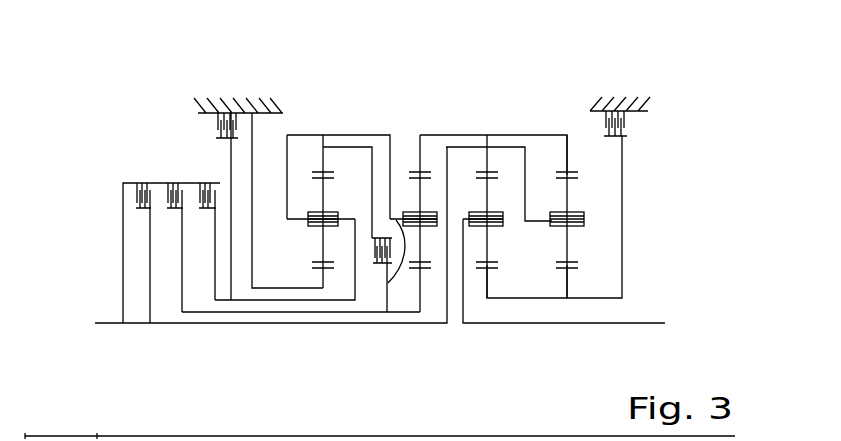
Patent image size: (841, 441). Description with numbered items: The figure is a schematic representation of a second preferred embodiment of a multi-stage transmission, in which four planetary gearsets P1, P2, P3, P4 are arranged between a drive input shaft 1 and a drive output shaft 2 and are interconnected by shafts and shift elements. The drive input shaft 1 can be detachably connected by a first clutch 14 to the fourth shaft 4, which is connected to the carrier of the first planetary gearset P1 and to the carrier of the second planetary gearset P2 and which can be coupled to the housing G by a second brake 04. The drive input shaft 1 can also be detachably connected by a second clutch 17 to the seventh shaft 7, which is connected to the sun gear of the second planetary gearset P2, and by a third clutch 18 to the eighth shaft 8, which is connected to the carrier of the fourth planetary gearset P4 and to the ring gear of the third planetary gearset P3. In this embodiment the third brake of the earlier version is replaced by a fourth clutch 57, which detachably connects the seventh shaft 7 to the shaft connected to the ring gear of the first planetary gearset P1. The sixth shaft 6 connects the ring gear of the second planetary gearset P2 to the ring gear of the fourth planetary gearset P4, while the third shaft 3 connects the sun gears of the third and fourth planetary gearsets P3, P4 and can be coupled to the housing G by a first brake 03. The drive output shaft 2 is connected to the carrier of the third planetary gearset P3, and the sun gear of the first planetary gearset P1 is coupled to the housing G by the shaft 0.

The drive input shaft 1 is at (103, 323).
The drive output shaft 2 is at (466, 224).
The third shaft 3 is at (486, 284).
The fourth shaft 4 is at (232, 168).
The shaft 0 is at (316, 266).
The sixth shaft 6 is at (443, 136).
The seventh shaft 7 is at (356, 146).
The eighth shaft 8 is at (514, 146).
The first clutch 14 is at (203, 183).
The second clutch 17 is at (172, 183).
The third clutch 18 is at (137, 183).
The fourth clutch 57 is at (371, 260).
The first brake 03 is at (627, 124).
The second brake 04 is at (223, 114).
The housing G is at (246, 113).
The first planetary gearset P1 is at (323, 124).
The second planetary gearset P2 is at (420, 124).
The third planetary gearset P3 is at (487, 124).
The fourth planetary gearset P4 is at (567, 124).